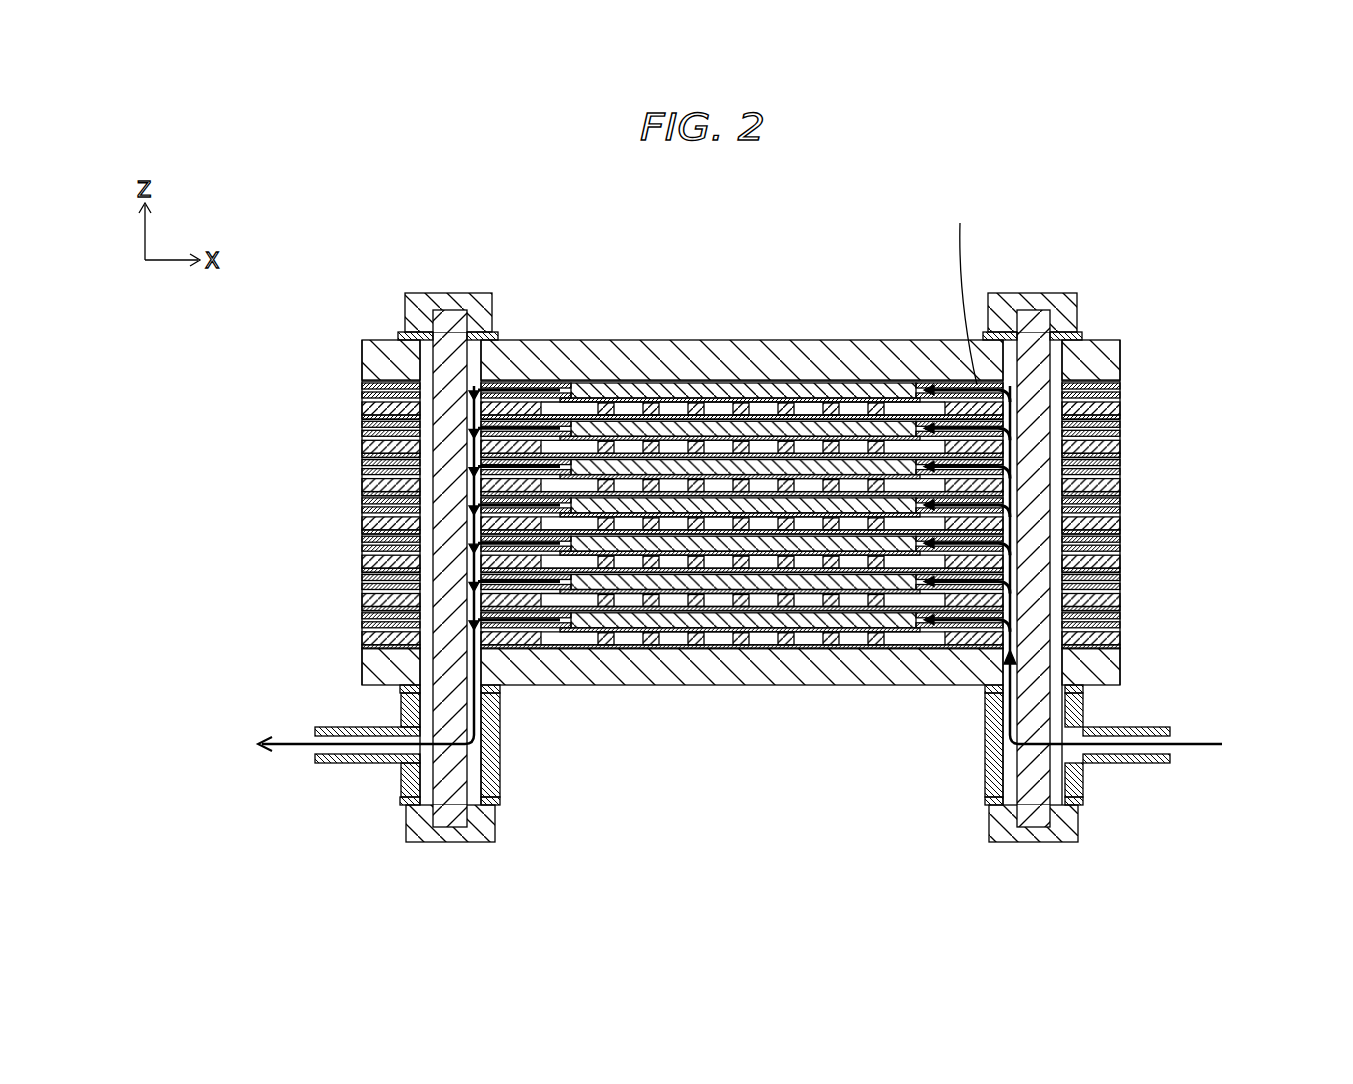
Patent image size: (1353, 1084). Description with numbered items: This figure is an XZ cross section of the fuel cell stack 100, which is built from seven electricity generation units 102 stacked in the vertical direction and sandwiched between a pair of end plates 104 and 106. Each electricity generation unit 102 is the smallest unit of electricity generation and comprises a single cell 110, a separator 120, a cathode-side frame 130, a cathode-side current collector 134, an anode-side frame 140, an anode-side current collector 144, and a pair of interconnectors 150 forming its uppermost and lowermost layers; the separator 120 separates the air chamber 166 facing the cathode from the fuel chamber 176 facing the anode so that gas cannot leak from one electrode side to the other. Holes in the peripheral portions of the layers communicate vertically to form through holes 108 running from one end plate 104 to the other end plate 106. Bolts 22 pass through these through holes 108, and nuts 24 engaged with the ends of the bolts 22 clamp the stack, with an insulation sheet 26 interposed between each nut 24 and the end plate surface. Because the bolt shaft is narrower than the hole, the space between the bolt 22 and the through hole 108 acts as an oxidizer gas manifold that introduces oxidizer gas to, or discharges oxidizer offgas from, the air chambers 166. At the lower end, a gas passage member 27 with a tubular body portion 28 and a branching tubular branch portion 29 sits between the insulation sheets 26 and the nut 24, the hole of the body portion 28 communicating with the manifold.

The fuel cell stack 100 is at (731, 548).
The electricity generation unit 102 is at (677, 451).
The end plate 104 is at (352, 380).
The end plate 106 is at (360, 660).
The through hole 108 is at (372, 362).
The bolt 22 is at (700, 564).
The nut 24 is at (438, 365).
The insulation sheet 26 is at (400, 335).
The gas passage member 27 is at (743, 788).
The body portion 28 is at (400, 775).
The branch portion 29 is at (335, 763).
The single cell 110 is at (765, 402).
The separator 120 is at (560, 400).
The cathode-side frame 130 is at (505, 398).
The anode-side frame 140 is at (528, 388).
The anode-side current collector 144 is at (728, 402).
The interconnector 150 is at (598, 400).
The cathode-side current collector 134 is at (820, 400).
The air chamber 166 is at (915, 400).
The fuel chamber 176 is at (890, 396).